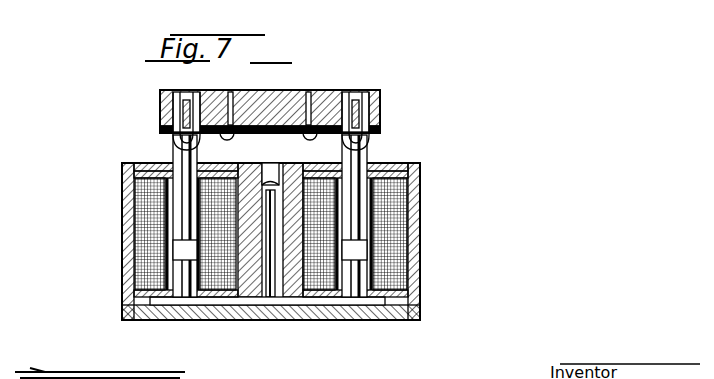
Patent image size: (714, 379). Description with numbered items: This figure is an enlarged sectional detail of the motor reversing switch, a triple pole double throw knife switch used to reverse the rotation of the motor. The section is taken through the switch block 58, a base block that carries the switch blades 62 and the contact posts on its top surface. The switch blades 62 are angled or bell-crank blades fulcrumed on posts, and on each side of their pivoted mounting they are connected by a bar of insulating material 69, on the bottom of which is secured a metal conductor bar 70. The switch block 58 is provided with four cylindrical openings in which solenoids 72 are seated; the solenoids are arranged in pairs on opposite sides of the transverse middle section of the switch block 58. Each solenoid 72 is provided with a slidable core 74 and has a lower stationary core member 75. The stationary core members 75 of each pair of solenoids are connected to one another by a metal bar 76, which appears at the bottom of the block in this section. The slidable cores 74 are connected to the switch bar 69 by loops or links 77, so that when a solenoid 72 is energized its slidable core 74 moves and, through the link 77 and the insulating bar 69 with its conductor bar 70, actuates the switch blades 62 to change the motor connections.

The base block 58 is at (410, 283).
The switch blades 62 is at (230, 90).
The bar of insulating material 69 is at (380, 97).
The metal conductor bar 70 is at (380, 130).
The solenoids 72 is at (134, 218).
The slidable cores 74 is at (176, 160).
The lower stationary core member 75 is at (134, 292).
The metal bar 76 is at (215, 318).
The loops or links 77 is at (172, 140).